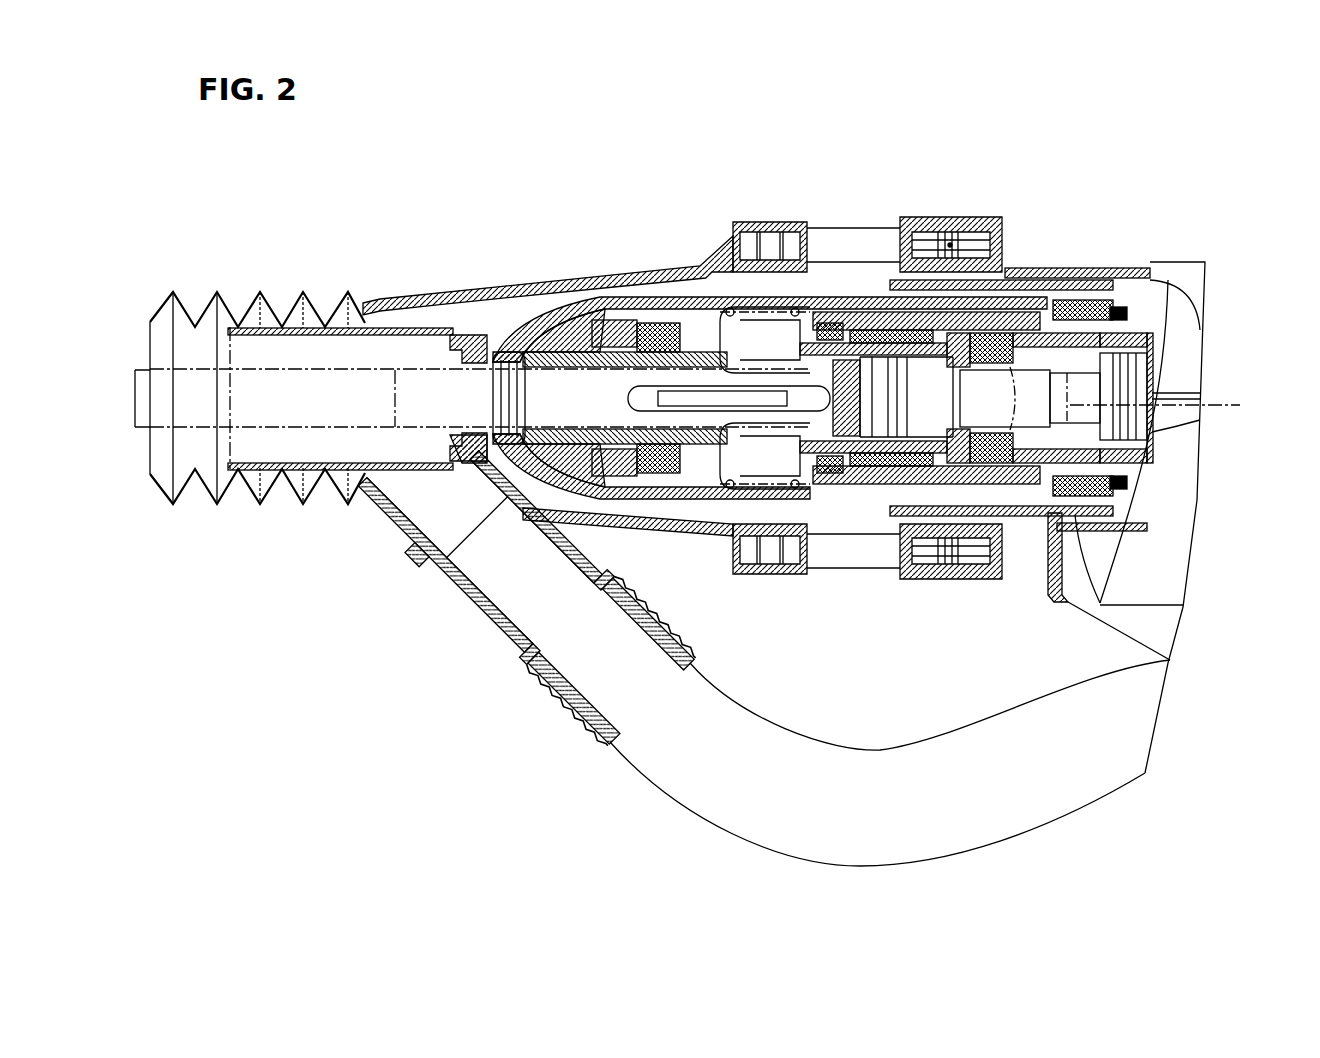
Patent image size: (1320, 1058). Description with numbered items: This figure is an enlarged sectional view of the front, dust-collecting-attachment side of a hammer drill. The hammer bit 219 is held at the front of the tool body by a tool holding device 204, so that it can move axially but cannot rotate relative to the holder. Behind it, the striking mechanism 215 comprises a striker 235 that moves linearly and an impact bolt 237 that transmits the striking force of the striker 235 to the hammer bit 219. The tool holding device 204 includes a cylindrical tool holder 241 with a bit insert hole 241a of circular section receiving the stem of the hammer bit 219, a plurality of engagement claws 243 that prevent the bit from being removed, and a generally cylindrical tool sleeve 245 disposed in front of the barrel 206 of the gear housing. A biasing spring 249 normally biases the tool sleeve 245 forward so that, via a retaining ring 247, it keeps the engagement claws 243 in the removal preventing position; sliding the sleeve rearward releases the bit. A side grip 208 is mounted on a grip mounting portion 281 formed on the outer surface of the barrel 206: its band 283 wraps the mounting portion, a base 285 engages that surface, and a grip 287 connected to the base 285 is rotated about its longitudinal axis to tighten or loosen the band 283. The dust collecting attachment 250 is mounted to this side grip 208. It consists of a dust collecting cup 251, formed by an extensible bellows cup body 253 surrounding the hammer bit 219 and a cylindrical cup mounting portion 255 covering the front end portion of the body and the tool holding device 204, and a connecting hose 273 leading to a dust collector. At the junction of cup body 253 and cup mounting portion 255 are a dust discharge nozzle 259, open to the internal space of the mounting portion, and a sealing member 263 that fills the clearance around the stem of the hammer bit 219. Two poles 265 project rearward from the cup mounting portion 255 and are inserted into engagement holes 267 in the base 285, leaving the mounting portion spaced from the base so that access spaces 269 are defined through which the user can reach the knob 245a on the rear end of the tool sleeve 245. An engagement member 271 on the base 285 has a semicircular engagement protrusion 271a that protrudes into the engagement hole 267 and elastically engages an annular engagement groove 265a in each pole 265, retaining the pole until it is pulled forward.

The tool holding device 204 is at (665, 327).
The barrel 206 is at (1089, 262).
The side grip 208 is at (925, 215).
The striking mechanism 215 is at (1088, 482).
The hammer bit 219 is at (157, 378).
The striker 235 is at (1143, 350).
The impact bolt 237 is at (1090, 397).
The tool holder 241 is at (646, 300).
The bit insert hole 241a is at (587, 340).
The engagement claws 243 is at (713, 300).
The tool sleeve 245 is at (800, 226).
The knob 245a is at (875, 565).
The retaining ring 247 is at (705, 322).
The biasing spring 249 is at (768, 308).
The dust collecting attachment 250 is at (397, 567).
The dust collecting cup 251 is at (392, 286).
The cup body 253 is at (298, 318).
The cup mounting portion 255 is at (583, 265).
The dust discharge nozzle 259 is at (460, 563).
The sealing member 263 is at (470, 432).
The poles 265 is at (853, 228).
The engagement groove 265a is at (1070, 262).
The engagement holes 267 is at (915, 220).
The access spaces 269 is at (831, 271).
The engagement member 271 is at (946, 240).
The engagement protrusion 271a is at (965, 235).
The connecting hose 273 is at (659, 791).
The grip mounting portion 281 is at (1005, 520).
The band 283 is at (968, 520).
The base 285 is at (952, 244).
The grip 287 is at (1179, 405).